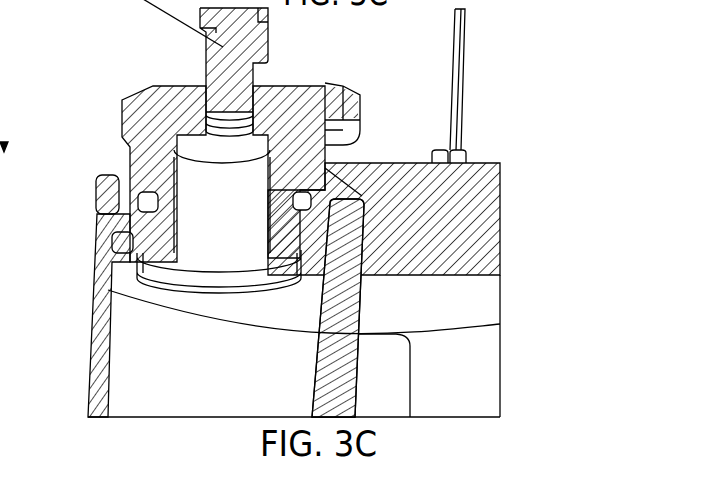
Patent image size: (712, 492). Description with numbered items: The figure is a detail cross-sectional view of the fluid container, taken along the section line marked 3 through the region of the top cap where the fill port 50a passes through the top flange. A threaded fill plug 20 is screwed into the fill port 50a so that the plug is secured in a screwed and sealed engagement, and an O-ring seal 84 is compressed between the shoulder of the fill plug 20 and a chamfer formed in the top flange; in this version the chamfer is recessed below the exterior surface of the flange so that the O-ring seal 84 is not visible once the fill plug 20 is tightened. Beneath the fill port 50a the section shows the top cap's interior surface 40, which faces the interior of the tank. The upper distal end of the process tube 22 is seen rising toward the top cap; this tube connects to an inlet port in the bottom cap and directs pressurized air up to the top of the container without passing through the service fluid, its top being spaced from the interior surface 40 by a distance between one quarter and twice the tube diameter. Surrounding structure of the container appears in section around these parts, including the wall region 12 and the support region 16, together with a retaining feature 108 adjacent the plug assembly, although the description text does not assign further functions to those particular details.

The fill plug 20 is at (152, 97).
The O-ring seal 84 is at (152, 205).
The retainer block 108 is at (137, 200).
The housing wall 12 is at (95, 292).
The fill port 50a is at (170, 283).
The top cap interior surface 40 is at (240, 312).
The support pillar 16 is at (340, 307).
The process tube 22 is at (388, 377).
The section indicator 3 is at (5, 164).